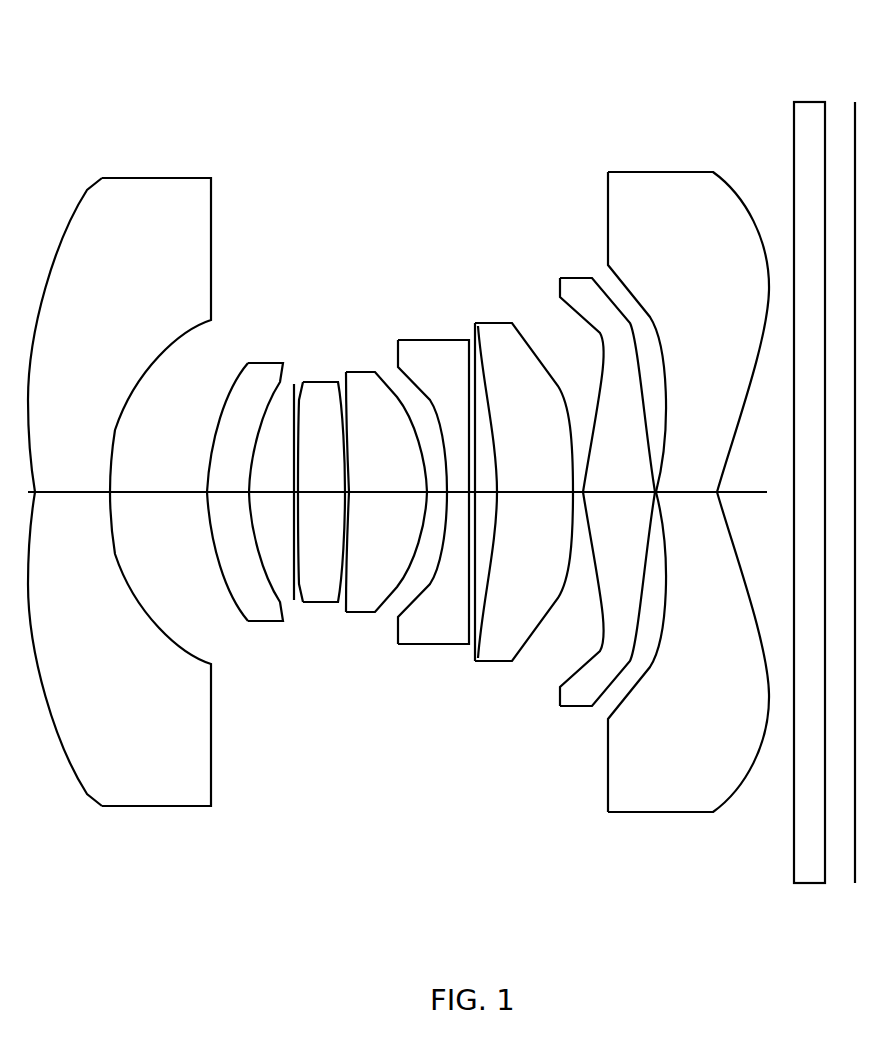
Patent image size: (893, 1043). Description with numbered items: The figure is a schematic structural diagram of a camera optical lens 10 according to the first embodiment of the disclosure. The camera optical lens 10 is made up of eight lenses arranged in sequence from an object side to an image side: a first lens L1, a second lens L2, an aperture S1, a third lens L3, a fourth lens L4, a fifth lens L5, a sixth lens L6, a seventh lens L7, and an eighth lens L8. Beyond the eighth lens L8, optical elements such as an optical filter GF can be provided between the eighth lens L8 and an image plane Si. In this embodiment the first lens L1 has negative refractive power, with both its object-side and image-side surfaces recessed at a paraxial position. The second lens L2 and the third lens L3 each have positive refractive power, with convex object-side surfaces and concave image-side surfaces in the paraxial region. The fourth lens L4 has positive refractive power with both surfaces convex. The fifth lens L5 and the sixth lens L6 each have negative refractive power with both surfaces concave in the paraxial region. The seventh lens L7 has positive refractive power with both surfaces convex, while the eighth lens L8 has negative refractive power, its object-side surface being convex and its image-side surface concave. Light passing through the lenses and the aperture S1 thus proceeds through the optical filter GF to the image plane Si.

The camera optical lens 10 is at (467, 44).
The first lens L1 is at (119, 480).
The second lens L2 is at (245, 476).
The third lens L3 is at (321, 476).
The fourth lens L4 is at (386, 478).
The fifth lens L5 is at (433, 479).
The sixth lens L6 is at (524, 480).
The seventh lens L7 is at (607, 479).
The eighth lens L8 is at (688, 478).
The aperture S1 is at (296, 599).
The optical filter GF is at (808, 477).
The image plane Si is at (853, 477).